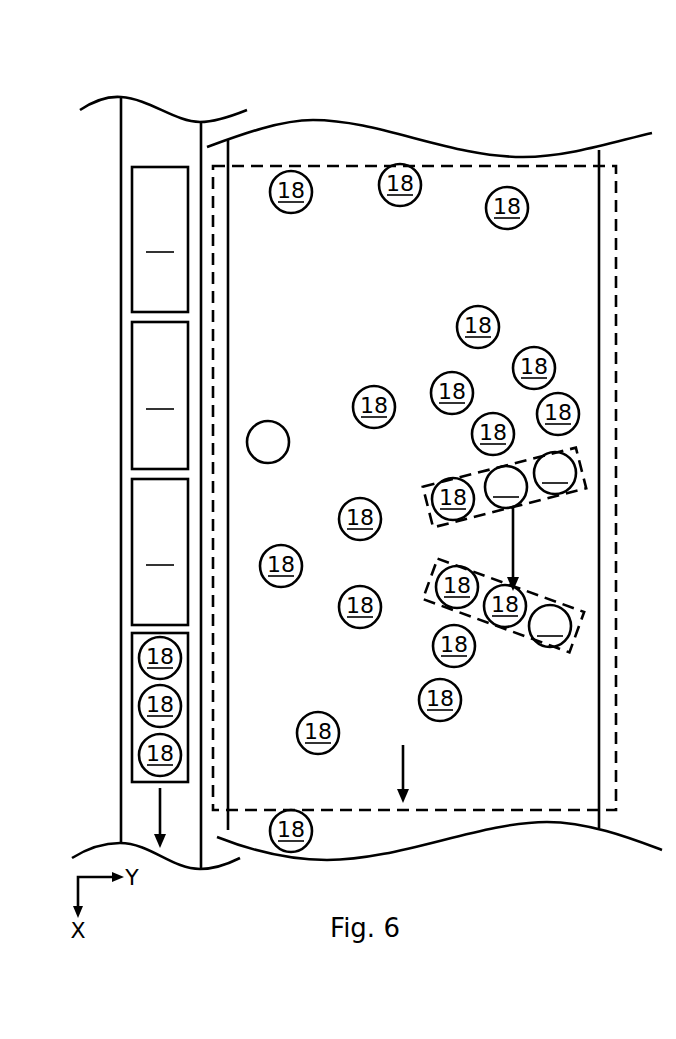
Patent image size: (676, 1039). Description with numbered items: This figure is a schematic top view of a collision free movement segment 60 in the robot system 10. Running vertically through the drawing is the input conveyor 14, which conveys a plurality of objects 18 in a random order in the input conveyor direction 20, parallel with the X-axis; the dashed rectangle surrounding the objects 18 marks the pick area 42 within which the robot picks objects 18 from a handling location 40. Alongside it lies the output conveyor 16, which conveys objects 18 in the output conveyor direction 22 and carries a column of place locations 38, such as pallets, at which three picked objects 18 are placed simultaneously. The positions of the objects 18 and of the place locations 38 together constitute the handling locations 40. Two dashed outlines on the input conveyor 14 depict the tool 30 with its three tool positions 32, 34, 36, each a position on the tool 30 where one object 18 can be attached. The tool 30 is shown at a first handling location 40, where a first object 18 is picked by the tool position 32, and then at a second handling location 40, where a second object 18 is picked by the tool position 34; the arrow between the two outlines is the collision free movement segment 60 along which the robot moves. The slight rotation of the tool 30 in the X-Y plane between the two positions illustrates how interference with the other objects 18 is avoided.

The robot system 10 is at (103, 73).
The input conveyor 14 is at (318, 143).
The output conveyor 16 is at (137, 143).
The objects 18 is at (359, 508).
The input conveyor direction 20 is at (403, 777).
The output conveyor direction 22 is at (158, 812).
The tool 30 is at (529, 557).
The tool position 32 is at (443, 483).
The tool position 34 is at (512, 630).
The tool position 36 is at (552, 549).
The place locations 38 is at (133, 680).
The handling locations 40 is at (513, 507).
The pick area 42 is at (603, 212).
The collision free movement segment 60 is at (510, 546).